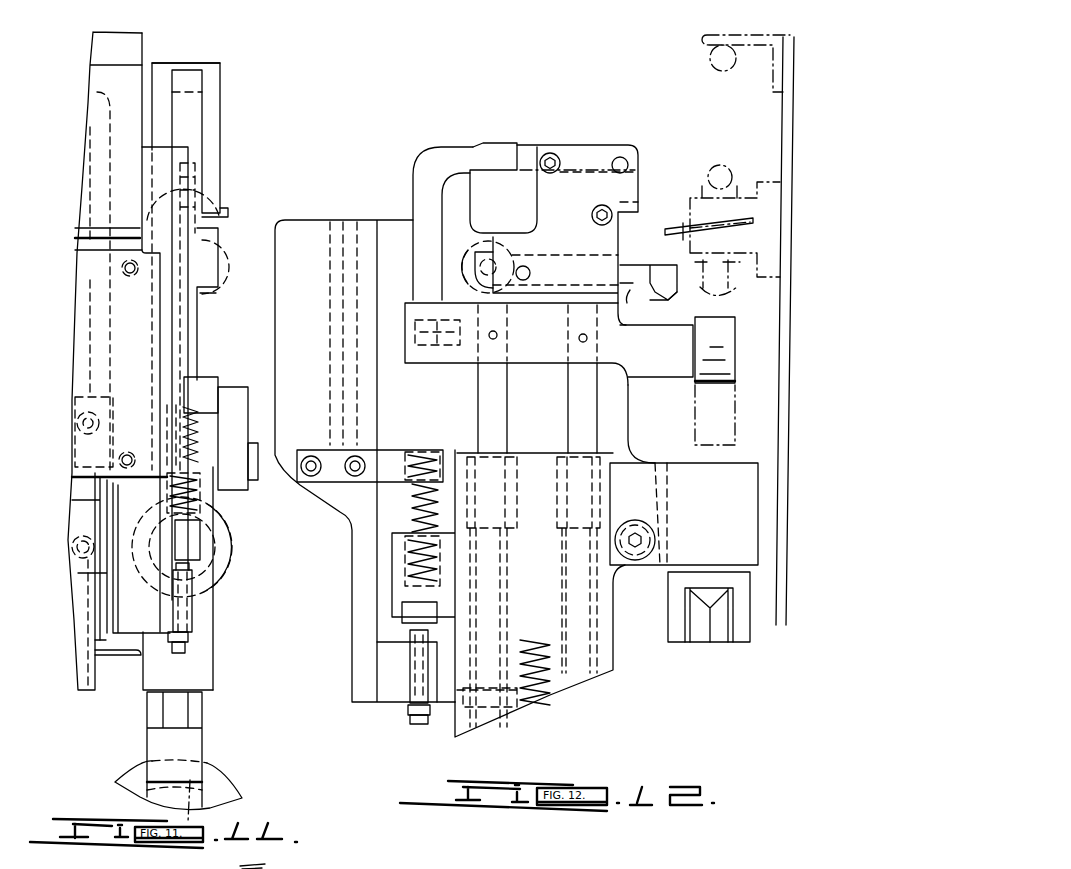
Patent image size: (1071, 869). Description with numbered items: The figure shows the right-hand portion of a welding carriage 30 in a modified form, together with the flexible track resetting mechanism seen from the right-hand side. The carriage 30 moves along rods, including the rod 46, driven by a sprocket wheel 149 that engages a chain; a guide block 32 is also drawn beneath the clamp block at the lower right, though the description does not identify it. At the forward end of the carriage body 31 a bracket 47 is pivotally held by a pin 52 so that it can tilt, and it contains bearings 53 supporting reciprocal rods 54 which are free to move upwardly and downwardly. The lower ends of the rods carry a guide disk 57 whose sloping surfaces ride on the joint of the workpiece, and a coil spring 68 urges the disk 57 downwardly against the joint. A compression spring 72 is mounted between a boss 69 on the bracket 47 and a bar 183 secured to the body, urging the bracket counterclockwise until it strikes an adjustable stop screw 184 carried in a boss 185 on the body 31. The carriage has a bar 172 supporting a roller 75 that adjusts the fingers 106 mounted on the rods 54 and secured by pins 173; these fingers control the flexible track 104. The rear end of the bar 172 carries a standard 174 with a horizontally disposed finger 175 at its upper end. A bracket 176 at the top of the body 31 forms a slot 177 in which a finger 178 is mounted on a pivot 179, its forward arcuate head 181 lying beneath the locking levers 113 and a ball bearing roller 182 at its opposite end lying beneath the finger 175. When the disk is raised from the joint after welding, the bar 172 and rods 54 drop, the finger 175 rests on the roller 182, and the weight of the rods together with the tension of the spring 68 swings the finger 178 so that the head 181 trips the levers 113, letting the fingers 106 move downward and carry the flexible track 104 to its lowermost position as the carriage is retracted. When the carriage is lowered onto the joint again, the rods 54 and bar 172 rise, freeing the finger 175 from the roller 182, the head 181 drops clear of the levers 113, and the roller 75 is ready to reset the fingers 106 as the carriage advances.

In FIG. 11, the carriage 30 is at (214, 556).
In FIG. 12, the carriage 30 is at (359, 648).
In FIG. 12, the body 31 is at (512, 200).
In FIG. 11, the guide block 32 is at (213, 597).
In FIG. 12, the guide block 32 is at (703, 643).
In FIG. 12, the rod 46 is at (712, 60).
In FIG. 12, the bracket 47 is at (548, 590).
In FIG. 12, the pin 52 is at (652, 538).
In FIG. 12, the bearings 53 is at (548, 445).
In FIG. 12, the reciprocal rods 54 is at (575, 395).
In FIG. 11, the guide disk 57 is at (221, 768).
In FIG. 12, the coil spring 68 is at (540, 712).
In FIG. 11, the boss 69 is at (200, 478).
In FIG. 12, the boss 69 is at (392, 560).
In FIG. 11, the spring 72 is at (192, 427).
In FIG. 12, the spring 72 is at (409, 508).
In FIG. 11, the roller 75 is at (200, 300).
In FIG. 12, the roller 75 is at (728, 347).
In FIG. 12, the flexible track 104 is at (722, 168).
In FIG. 12, the fingers 106 is at (706, 178).
In FIG. 12, the locking levers 113 is at (680, 245).
In FIG. 11, the sprocket wheel 149 is at (129, 673).
In FIG. 12, the bar 172 is at (670, 355).
In FIG. 12, the pins 173 is at (579, 338).
In FIG. 11, the standard 174 is at (192, 118).
In FIG. 12, the standard 174 is at (420, 198).
In FIG. 11, the horizontally disposed finger 175 is at (190, 83).
In FIG. 12, the horizontally disposed finger 175 is at (487, 158).
In FIG. 12, the bracket 176 is at (579, 152).
In FIG. 12, the slot 177 is at (694, 227).
In FIG. 12, the finger 178 is at (648, 293).
In FIG. 12, the pivot 179 is at (530, 268).
In FIG. 11, the arcuate head 181 is at (222, 207).
In FIG. 12, the arcuate head 181 is at (672, 297).
In FIG. 11, the ball bearing roller 182 is at (208, 153).
In FIG. 12, the ball bearing roller 182 is at (475, 247).
In FIG. 11, the bar 183 is at (197, 380).
In FIG. 12, the bar 183 is at (397, 447).
In FIG. 11, the stop screw 184 is at (188, 648).
In FIG. 12, the stop screw 184 is at (415, 722).
In FIG. 11, the boss 185 is at (192, 622).
In FIG. 12, the boss 185 is at (395, 690).